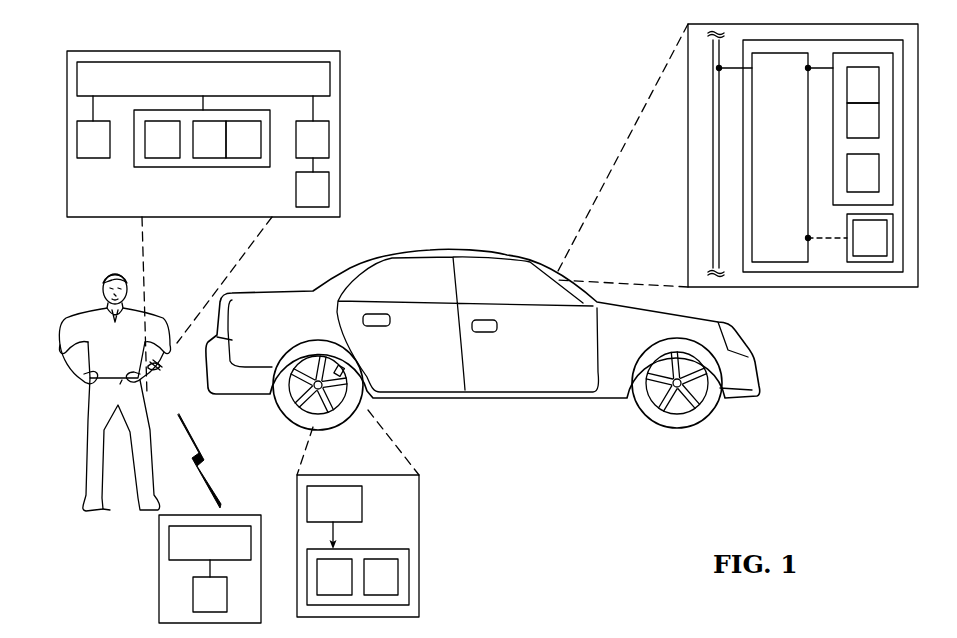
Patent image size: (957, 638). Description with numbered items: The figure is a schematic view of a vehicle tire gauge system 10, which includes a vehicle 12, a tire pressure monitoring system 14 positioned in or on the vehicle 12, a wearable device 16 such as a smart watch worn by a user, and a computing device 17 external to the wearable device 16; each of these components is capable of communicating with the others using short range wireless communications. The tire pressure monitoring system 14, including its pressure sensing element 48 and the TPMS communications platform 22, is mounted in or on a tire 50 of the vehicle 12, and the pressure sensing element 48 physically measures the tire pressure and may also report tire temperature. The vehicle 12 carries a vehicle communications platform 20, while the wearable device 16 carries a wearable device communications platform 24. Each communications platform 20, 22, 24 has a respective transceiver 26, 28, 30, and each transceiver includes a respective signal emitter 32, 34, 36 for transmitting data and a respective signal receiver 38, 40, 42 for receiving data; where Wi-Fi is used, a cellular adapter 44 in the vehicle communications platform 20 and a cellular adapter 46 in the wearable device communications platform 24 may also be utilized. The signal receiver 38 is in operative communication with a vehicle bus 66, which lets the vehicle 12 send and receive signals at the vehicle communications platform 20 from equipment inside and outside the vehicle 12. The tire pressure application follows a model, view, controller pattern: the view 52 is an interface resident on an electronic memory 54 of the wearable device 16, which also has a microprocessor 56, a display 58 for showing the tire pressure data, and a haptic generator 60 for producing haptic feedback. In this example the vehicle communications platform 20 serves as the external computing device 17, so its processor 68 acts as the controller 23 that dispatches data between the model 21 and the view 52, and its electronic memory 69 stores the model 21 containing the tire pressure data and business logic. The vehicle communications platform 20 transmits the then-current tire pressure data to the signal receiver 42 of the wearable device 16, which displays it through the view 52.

The system 10 is at (500, 325).
The vehicle 12 is at (483, 323).
The tire pressure monitoring system 14 is at (318, 339).
The wearable device 16 is at (161, 372).
The computing device 17 is at (182, 569).
The vehicle communications platform 20 is at (569, 326).
The model 21 is at (864, 246).
The TPMS communications platform 22 is at (412, 546).
The controller 23 is at (204, 552).
The wearable device communications platform 24 is at (201, 157).
The transceiver 26 is at (889, 129).
The transceiver 28 is at (412, 546).
The transceiver 30 is at (203, 149).
The signal emitter 32 is at (857, 93).
The signal emitter 34 is at (381, 577).
The signal emitter 36 is at (237, 148).
The signal receiver 38 is at (857, 129).
The signal receiver 40 is at (328, 585).
The signal receiver 42 is at (203, 148).
The cellular adapter 44 is at (863, 173).
The cellular adapter 46 is at (156, 148).
The pressure sensing element 48 is at (328, 512).
The tire 50 is at (288, 412).
The view 52 is at (307, 198).
The electronic memory 54 is at (307, 148).
The microprocessor 56 is at (197, 88).
The display 58 is at (160, 368).
The haptic generator 60 is at (87, 148).
The vehicle bus 66 is at (713, 228).
The processor 68 is at (798, 165).
The electronic memory 69 is at (543, 413).